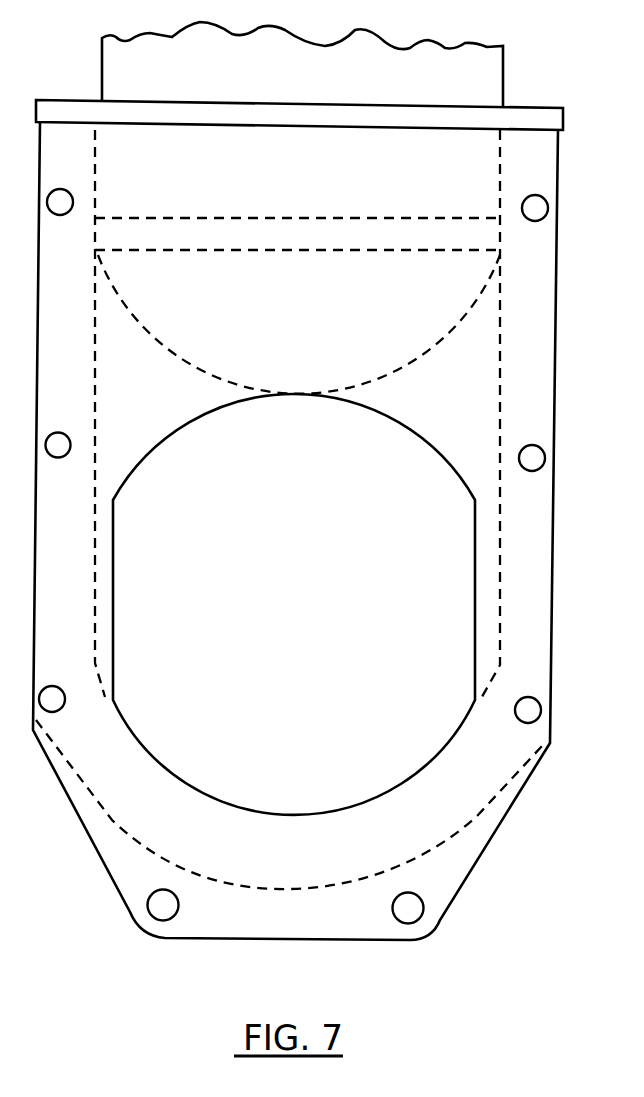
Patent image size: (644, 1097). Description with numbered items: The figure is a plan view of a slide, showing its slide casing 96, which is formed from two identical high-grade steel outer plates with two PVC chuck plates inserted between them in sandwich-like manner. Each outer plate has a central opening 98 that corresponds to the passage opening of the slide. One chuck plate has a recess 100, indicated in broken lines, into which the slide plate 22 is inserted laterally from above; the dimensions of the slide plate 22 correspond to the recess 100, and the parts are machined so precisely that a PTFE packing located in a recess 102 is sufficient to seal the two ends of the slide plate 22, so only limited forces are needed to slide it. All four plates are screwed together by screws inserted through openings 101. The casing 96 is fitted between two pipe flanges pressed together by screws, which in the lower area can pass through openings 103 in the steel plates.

The slide plate 22 is at (487, 78).
The slide casing 96 is at (580, 357).
The central opening 98 is at (368, 566).
The recess 100 is at (498, 399).
The openings 101 is at (548, 208).
The recess 102 is at (262, 237).
The openings 103 is at (405, 910).